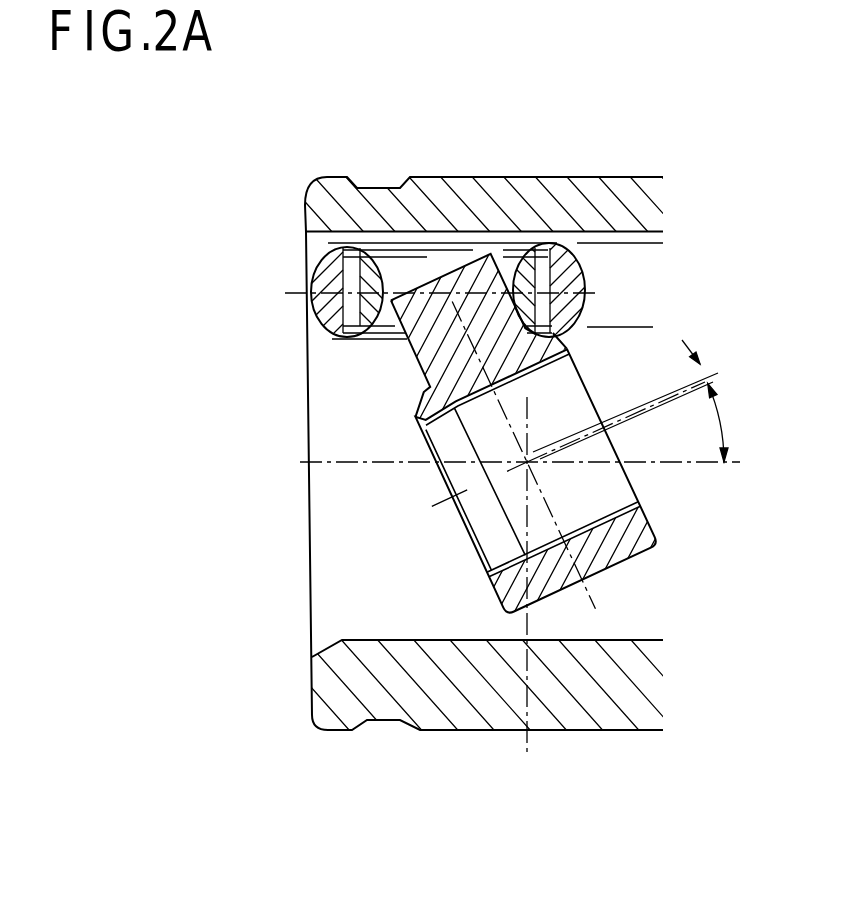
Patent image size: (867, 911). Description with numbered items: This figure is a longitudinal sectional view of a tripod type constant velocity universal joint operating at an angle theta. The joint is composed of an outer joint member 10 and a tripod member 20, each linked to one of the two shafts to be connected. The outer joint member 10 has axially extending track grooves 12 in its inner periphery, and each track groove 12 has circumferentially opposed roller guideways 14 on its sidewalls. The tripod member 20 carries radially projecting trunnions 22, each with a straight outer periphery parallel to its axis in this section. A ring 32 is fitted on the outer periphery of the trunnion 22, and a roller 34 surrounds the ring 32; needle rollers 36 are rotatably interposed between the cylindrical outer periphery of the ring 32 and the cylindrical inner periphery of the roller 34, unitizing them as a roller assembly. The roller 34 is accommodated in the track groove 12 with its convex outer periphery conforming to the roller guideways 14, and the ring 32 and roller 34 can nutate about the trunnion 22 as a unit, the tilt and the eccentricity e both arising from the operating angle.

The outer joint member 10 is at (452, 178).
The track groove 12 is at (306, 250).
The roller guideway 14 is at (620, 298).
The tripod member 20 is at (645, 553).
The trunnion 22 is at (428, 362).
The ring 32 is at (378, 272).
The roller 34 is at (335, 327).
The needle roller 36 is at (345, 281).